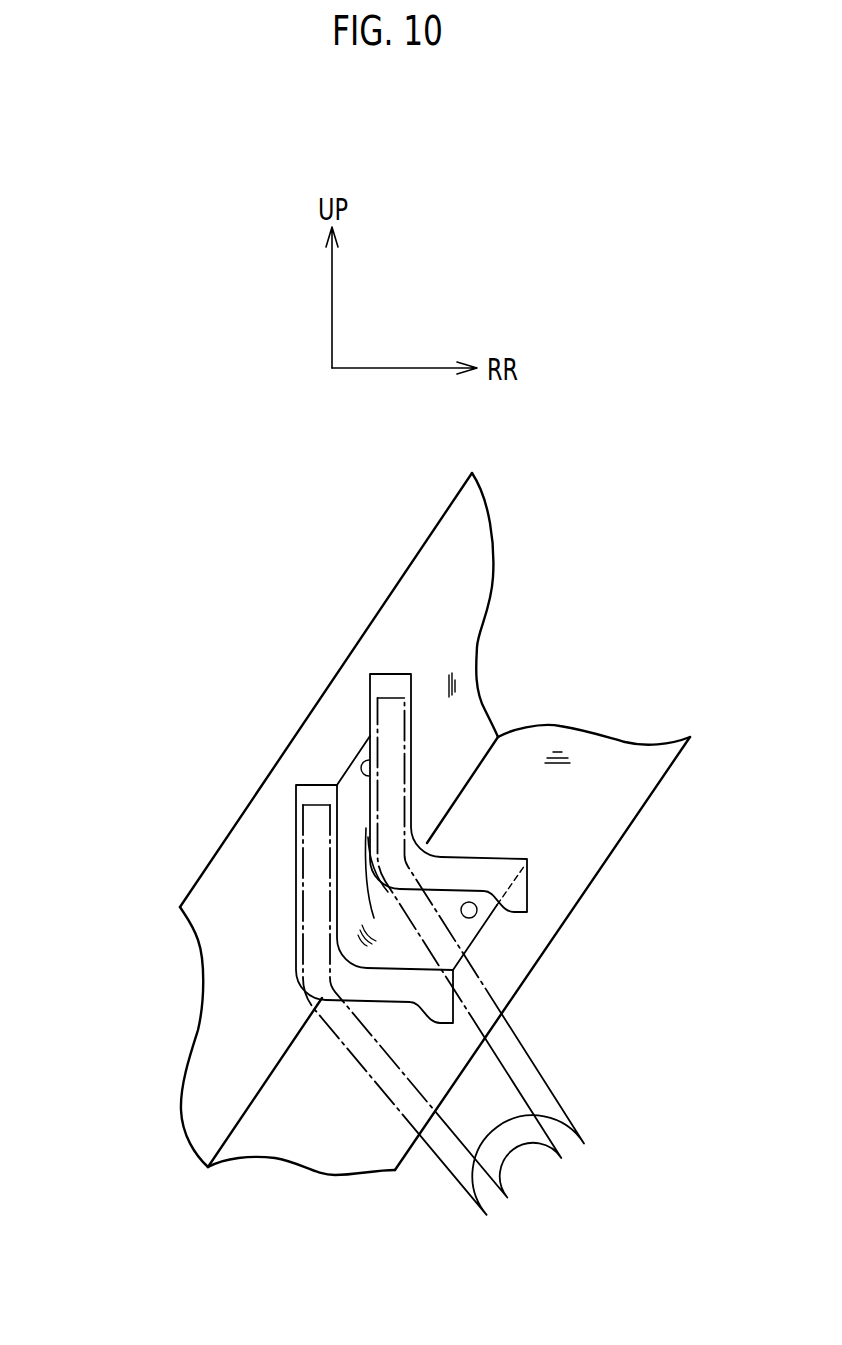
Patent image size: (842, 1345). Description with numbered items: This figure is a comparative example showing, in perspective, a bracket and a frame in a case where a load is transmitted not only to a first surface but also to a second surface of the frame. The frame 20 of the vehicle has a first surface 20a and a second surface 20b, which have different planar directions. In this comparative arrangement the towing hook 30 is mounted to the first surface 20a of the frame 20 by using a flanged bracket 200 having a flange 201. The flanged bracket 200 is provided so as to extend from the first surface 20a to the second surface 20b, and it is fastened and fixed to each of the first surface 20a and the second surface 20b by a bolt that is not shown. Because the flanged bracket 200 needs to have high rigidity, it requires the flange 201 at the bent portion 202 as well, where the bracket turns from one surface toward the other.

The frame 20 is at (397, 824).
The first surface 20a is at (220, 950).
The second surface 20b is at (593, 837).
The flanged bracket 200 is at (397, 795).
The flange 201 is at (398, 680).
The bent portion 202 is at (368, 830).
The towing hook 30 is at (600, 1097).